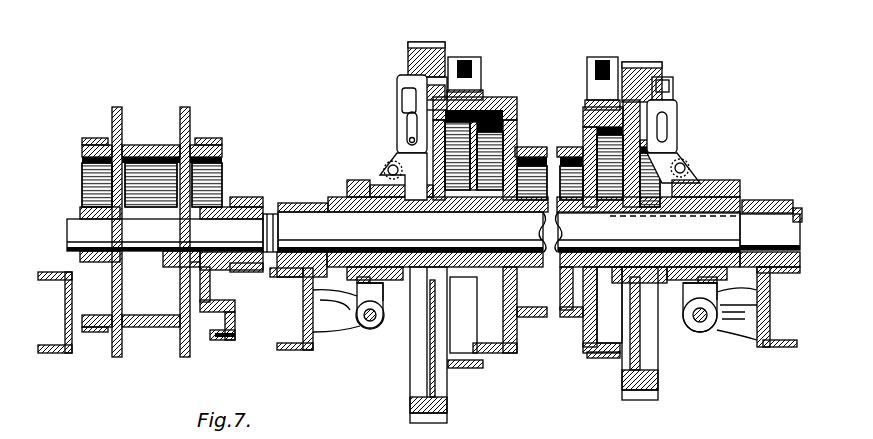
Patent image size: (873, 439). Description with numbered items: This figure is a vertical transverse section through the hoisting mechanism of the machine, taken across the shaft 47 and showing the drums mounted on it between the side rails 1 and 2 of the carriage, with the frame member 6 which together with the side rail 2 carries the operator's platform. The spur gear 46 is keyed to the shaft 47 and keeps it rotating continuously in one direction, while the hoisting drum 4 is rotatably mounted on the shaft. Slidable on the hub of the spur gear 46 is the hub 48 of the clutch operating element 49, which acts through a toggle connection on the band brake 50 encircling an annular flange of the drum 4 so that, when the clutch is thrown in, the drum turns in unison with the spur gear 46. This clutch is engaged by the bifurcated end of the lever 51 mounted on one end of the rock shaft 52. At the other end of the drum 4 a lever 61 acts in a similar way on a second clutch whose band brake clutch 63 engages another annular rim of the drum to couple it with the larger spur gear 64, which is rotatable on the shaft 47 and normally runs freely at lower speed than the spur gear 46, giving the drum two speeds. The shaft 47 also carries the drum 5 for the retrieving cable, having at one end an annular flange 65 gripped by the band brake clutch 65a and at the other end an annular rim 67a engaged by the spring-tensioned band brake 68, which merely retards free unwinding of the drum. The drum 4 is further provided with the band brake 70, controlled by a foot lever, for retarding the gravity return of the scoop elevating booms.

The side rail 1 is at (305, 350).
The side rail 2 is at (767, 347).
The hoisting drum 4 is at (532, 147).
The drum 5 is at (138, 145).
The frame member 6 is at (62, 353).
The spur gear 46 is at (647, 62).
The shaft 47 is at (72, 233).
The hub 48 is at (695, 177).
The clutch operating element 49 is at (672, 88).
The band brake 50 is at (607, 358).
The lever 51 is at (690, 284).
The rock shaft 52 is at (702, 322).
The lever 61 is at (386, 333).
The band brake clutch 63 is at (467, 368).
The spur gear 64 is at (423, 50).
The annular flange 65 is at (256, 122).
The band brake clutch 65a is at (233, 139).
The annular rim 67a is at (83, 162).
The band brake 68 is at (97, 140).
The band brake 70 is at (500, 107).